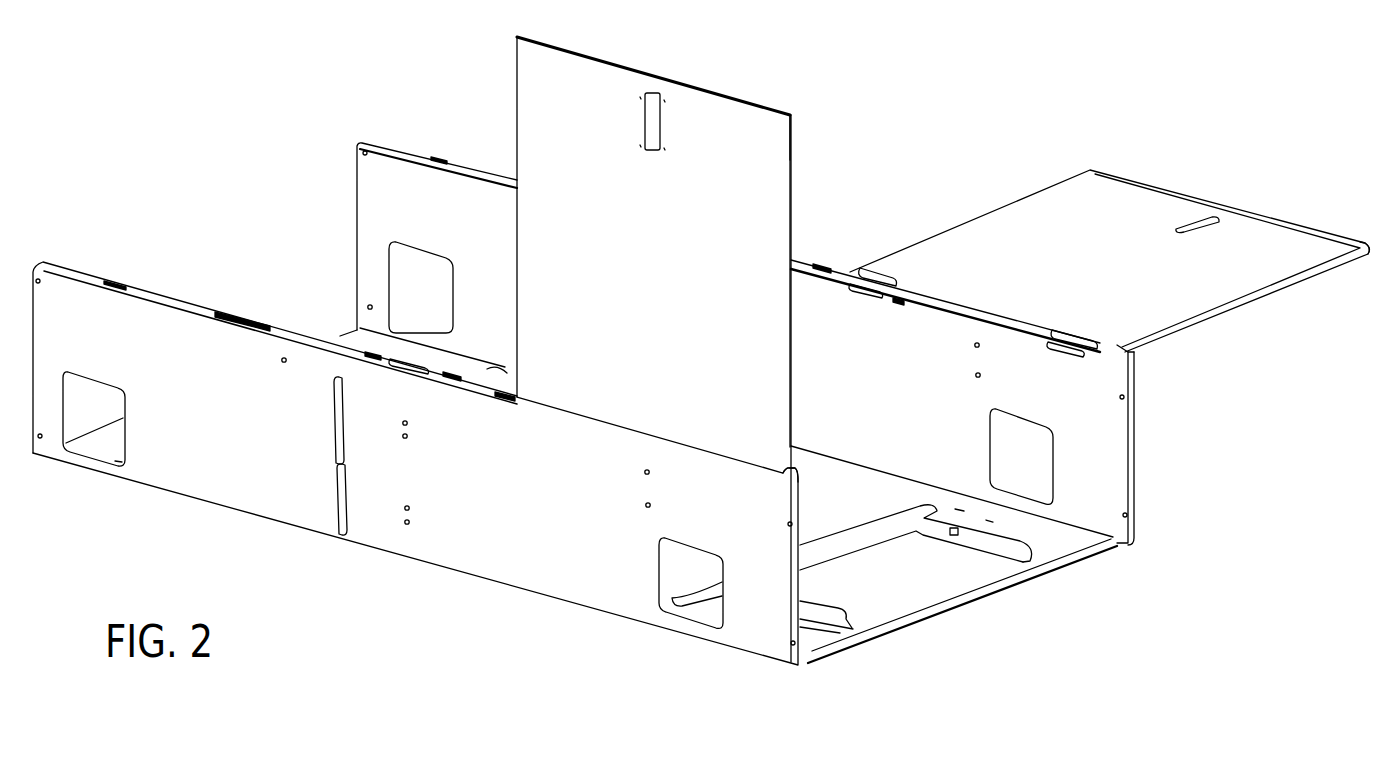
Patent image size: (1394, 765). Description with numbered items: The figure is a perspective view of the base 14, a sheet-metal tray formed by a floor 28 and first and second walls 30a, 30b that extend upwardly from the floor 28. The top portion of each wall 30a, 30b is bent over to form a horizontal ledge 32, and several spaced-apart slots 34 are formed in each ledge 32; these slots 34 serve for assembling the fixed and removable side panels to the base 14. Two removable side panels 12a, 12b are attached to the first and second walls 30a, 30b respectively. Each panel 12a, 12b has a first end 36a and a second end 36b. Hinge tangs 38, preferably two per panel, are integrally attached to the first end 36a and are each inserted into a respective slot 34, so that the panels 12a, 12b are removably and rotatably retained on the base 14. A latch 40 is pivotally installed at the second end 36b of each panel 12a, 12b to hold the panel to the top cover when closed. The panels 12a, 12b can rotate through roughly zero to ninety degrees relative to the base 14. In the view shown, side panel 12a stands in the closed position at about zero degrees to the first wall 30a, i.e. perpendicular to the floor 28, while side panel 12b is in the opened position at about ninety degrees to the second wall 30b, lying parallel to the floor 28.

The base 14 is at (577, 650).
The floor 28 is at (920, 585).
The first wall 30a is at (544, 503).
The second wall 30b is at (869, 419).
The horizontal ledge 32 is at (172, 296).
The slots 34 is at (118, 282).
The first end 36a is at (797, 468).
The second end 36b is at (792, 152).
The hinge tang 38 is at (882, 277).
The latch 40 is at (645, 118).
The removable side panel 12a is at (672, 290).
The removable side panel 12b is at (1094, 263).